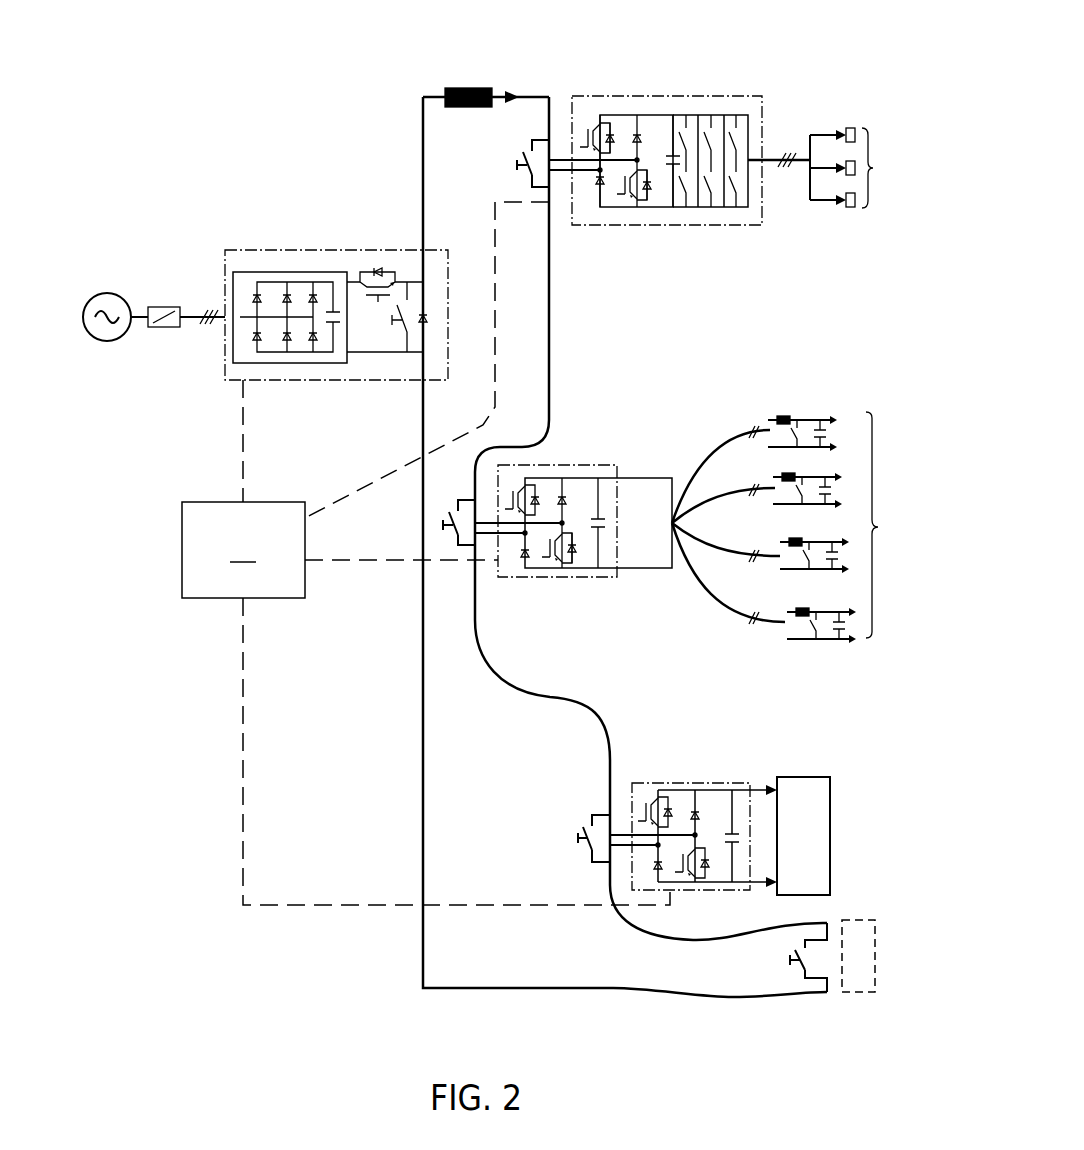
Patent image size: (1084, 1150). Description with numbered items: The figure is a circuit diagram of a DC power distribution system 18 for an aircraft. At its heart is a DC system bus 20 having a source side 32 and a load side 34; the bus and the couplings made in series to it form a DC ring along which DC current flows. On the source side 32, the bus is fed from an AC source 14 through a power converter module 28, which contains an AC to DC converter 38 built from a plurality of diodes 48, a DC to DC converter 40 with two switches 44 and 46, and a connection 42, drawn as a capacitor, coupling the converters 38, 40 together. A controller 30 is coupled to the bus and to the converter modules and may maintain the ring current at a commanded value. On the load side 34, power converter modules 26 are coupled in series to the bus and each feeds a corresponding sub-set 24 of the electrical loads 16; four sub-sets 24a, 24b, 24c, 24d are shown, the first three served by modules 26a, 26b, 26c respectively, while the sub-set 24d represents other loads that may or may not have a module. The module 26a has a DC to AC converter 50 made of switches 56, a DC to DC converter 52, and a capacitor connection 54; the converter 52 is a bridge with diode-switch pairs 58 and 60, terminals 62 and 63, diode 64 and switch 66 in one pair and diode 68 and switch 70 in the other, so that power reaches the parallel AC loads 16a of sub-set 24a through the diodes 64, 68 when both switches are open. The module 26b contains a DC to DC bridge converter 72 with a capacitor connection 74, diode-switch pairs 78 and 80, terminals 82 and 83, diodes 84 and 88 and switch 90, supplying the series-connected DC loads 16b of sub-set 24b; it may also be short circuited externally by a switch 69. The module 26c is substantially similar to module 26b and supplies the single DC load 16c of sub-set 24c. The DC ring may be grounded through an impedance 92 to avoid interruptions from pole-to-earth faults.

The source 14 is at (107, 292).
The electrical loads 16 is at (850, 210).
The electrical loads of sub-set 24a 16a is at (850, 128).
The electrical loads of sub-set 24b 16b is at (800, 416).
The electrical load of sub-set 24c 16c is at (805, 885).
The DC power distribution system 18 is at (328, 70).
The DC system bus 20 is at (413, 726).
The sub-sets of electrical loads 24 is at (839, 113).
The first sub-set of electrical loads 24a is at (863, 147).
The second sub-set of electrical loads 24b is at (796, 626).
The third sub-set of electrical loads 24c is at (837, 841).
The fourth sub-set of electrical loads 24d is at (857, 917).
The power converter modules 26 is at (765, 100).
The first power converter module 26a is at (690, 93).
The second power converter module 26b is at (567, 465).
The third power converter module 26c is at (640, 783).
The power converter module 28 is at (292, 384).
The controller 30 is at (426, 553).
The source side 32 is at (398, 172).
The load side 34 is at (564, 383).
The AC to DC converter 38 is at (241, 267).
The DC to DC converter 40 is at (377, 344).
The connection 42 is at (336, 334).
The switch 44 is at (380, 266).
The switch 46 is at (430, 306).
The diodes 48 is at (250, 335).
The DC to AC converter 50 is at (717, 111).
The DC to DC converter 52 is at (619, 126).
The connection 54 is at (675, 166).
The switches 56 is at (735, 189).
The diode-switch pair 58 is at (639, 209).
The diode-switch pair 60 is at (604, 209).
The terminal 62 is at (639, 157).
The terminal 63 is at (598, 168).
The diode 64 is at (639, 132).
The switch 66 is at (648, 191).
The diode 68 is at (597, 183).
The switch 69 is at (504, 156).
The switch 70 is at (582, 108).
The DC to DC converter 72 is at (549, 574).
The connection 74 is at (601, 517).
The diode-switch pair 78 is at (564, 585).
The diode-switch pair 80 is at (526, 592).
The terminal 82 is at (564, 521).
The terminal 83 is at (523, 535).
The diode 84 is at (565, 498).
The diode 88 is at (523, 557).
The switch 90 is at (513, 475).
The impedance 92 is at (457, 87).